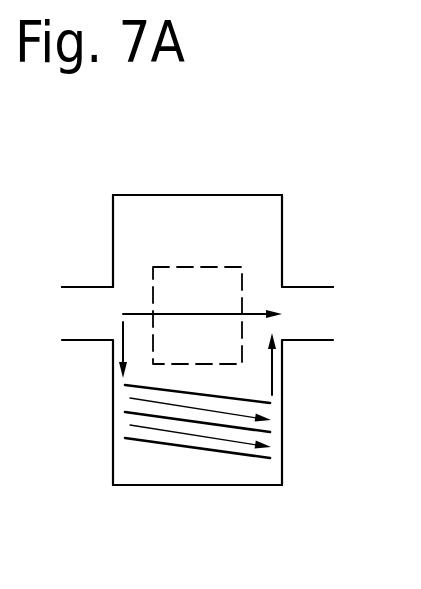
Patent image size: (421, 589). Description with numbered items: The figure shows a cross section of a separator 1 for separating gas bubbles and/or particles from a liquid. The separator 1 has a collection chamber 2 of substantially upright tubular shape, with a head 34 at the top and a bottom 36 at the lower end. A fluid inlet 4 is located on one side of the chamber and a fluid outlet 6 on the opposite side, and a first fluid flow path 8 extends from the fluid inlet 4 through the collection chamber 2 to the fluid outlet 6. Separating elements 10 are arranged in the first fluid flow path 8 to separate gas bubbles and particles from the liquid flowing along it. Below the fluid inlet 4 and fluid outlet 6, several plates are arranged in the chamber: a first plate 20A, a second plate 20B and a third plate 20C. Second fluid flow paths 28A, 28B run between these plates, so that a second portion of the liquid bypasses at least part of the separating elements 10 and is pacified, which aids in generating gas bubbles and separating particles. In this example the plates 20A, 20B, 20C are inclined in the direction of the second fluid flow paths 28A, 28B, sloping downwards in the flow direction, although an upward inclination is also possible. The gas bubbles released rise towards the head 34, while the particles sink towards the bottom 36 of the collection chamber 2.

The separator 1 is at (193, 342).
The collection chamber 2 is at (112, 234).
The fluid inlet 4 is at (78, 287).
The fluid outlet 6 is at (318, 287).
The first fluid flow path 8 is at (130, 314).
The separating elements 10 is at (228, 267).
The first plate 20A is at (267, 458).
The second plate 20B is at (267, 432).
The third plate 20C is at (267, 402).
The second fluid flow path 28A is at (130, 398).
The second fluid flow path 28B is at (130, 425).
The head 34 is at (205, 210).
The bottom 36 is at (191, 473).